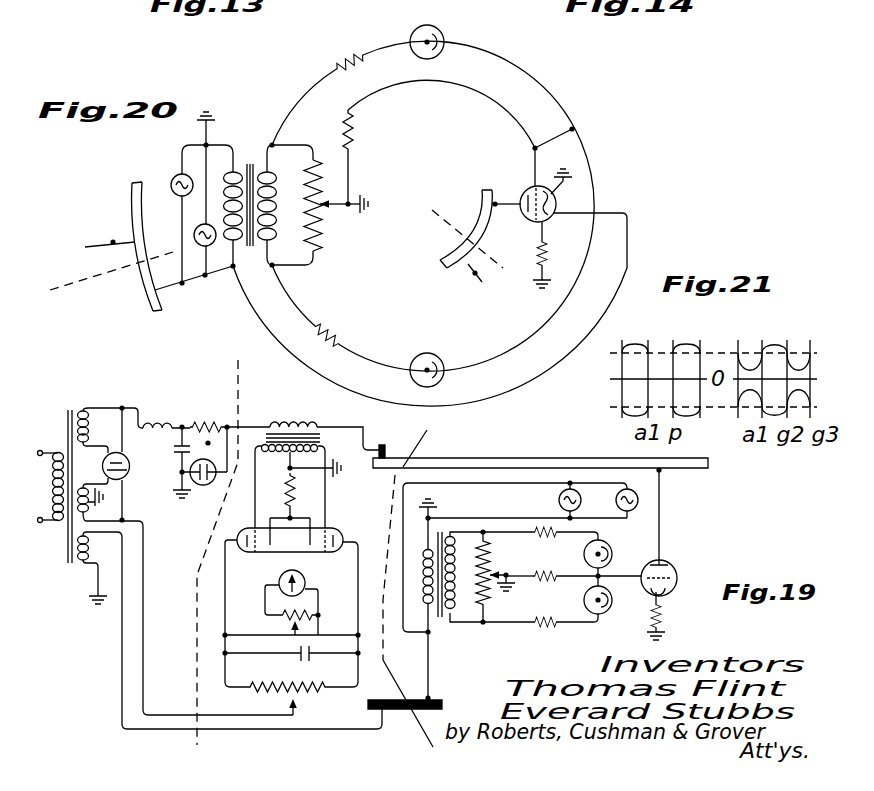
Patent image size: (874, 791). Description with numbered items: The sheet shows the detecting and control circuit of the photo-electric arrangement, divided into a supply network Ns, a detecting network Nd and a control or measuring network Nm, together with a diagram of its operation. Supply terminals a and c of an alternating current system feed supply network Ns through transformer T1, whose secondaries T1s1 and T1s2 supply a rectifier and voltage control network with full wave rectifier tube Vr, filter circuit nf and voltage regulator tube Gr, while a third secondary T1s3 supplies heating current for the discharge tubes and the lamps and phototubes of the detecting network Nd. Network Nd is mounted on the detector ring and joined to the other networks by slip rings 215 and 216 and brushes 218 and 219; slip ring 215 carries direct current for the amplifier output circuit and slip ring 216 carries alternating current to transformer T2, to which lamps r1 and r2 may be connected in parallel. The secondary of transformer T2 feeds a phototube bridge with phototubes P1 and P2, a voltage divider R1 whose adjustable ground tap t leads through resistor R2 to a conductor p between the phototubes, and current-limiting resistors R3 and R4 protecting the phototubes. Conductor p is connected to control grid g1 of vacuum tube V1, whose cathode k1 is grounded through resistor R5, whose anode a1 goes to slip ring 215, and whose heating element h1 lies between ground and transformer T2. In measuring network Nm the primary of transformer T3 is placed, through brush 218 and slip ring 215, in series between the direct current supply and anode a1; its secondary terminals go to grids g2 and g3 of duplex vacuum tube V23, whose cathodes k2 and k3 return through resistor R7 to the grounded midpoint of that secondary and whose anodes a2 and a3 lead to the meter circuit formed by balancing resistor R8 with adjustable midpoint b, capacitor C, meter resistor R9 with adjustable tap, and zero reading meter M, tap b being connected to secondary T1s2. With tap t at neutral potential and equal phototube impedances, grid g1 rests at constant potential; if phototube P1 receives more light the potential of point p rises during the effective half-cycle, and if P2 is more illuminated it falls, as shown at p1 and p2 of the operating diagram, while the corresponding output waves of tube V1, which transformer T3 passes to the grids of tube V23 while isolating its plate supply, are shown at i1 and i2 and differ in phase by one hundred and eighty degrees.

In FIG. 20, the slip ring 215 is at (483, 194).
In FIG. 19, the slip ring 215 is at (673, 475).
In FIG. 20, the slip ring 216 is at (133, 190).
In FIG. 19, the slip ring 216 is at (430, 696).
In FIG. 20, the brush 218 is at (472, 274).
In FIG. 19, the brush 218 is at (381, 445).
In FIG. 20, the brush 219 is at (115, 240).
In FIG. 19, the brush 219 is at (384, 712).
In FIG. 20, the lamp r1 is at (172, 183).
In FIG. 19, the lamp r1 is at (526, 500).
In FIG. 20, the lamp r2 is at (214, 246).
In FIG. 19, the lamp r2 is at (618, 506).
In FIG. 19, the transformer T1 is at (64, 413).
In FIG. 19, the secondary T1s1 is at (90, 425).
In FIG. 19, the secondary T1s2 is at (86, 515).
In FIG. 19, the third secondary T1s3 is at (88, 562).
In FIG. 20, the transformer T2 is at (248, 156).
In FIG. 19, the transformer T2 is at (445, 526).
In FIG. 19, the transformer T3 is at (322, 430).
In FIG. 20, the adjustable ground tap t is at (328, 200).
In FIG. 19, the adjustable ground tap t is at (508, 572).
In FIG. 20, the voltage divider R1 is at (328, 232).
In FIG. 19, the voltage divider R1 is at (487, 565).
In FIG. 20, the resistor R2 is at (372, 130).
In FIG. 19, the resistor R2 is at (533, 590).
In FIG. 20, the current-limiting resistor R3 is at (340, 62).
In FIG. 19, the current-limiting resistor R3 is at (546, 538).
In FIG. 20, the current-limiting resistor R4 is at (336, 332).
In FIG. 19, the current-limiting resistor R4 is at (540, 626).
In FIG. 20, the resistor R5 is at (554, 254).
In FIG. 19, the resistor R5 is at (652, 616).
In FIG. 19, the resistor R7 is at (303, 492).
In FIG. 19, the balancing resistor R8 is at (291, 663).
In FIG. 19, the meter resistor R9 is at (282, 617).
In FIG. 20, the phototube P1 is at (440, 33).
In FIG. 19, the phototube P1 is at (609, 549).
In FIG. 20, the phototube P2 is at (432, 354).
In FIG. 19, the phototube P2 is at (598, 616).
In FIG. 20, the conductor p is at (556, 138).
In FIG. 19, the conductor p is at (604, 578).
In FIG. 20, the anode a1 is at (522, 193).
In FIG. 19, the anode a1 is at (663, 562).
In FIG. 19, the anode a2 is at (245, 545).
In FIG. 19, the anode a3 is at (336, 538).
In FIG. 20, the control grid g1 is at (548, 186).
In FIG. 19, the control grid g1 is at (672, 579).
In FIG. 19, the grid g2 is at (254, 536).
In FIG. 19, the grid g3 is at (328, 528).
In FIG. 20, the cathode k1 is at (556, 203).
In FIG. 19, the cathode k1 is at (667, 595).
In FIG. 19, the cathode k2 is at (268, 522).
In FIG. 19, the cathode k3 is at (312, 550).
In FIG. 20, the heating element h1 is at (558, 211).
In FIG. 20, the vacuum tube V1 is at (556, 196).
In FIG. 19, the vacuum tube V1 is at (677, 580).
In FIG. 19, the duplex vacuum tube V23 is at (262, 562).
In FIG. 19, the full wave rectifier tube Vr is at (131, 464).
In FIG. 19, the voltage regulator tube Gr is at (197, 487).
In FIG. 19, the filter circuit nf is at (208, 443).
In FIG. 19, the zero reading meter M is at (310, 590).
In FIG. 19, the capacitor C is at (291, 664).
In FIG. 19, the adjustable midpoint b is at (300, 702).
In FIG. 19, the supply terminal a is at (45, 440).
In FIG. 19, the supply terminal c is at (44, 532).
In FIG. 20, the supply network Ns is at (248, 256).
In FIG. 19, the supply network Ns is at (217, 360).
In FIG. 20, the detecting network Nd is at (480, 216).
In FIG. 19, the detecting network Nd is at (430, 588).
In FIG. 19, the control or measuring network Nm is at (242, 552).
In FIG. 21, the potential condition p1 is at (622, 346).
In FIG. 21, the potential condition p2 is at (688, 346).
In FIG. 21, the current waveform i1 is at (752, 350).
In FIG. 21, the current waveform i2 is at (810, 402).